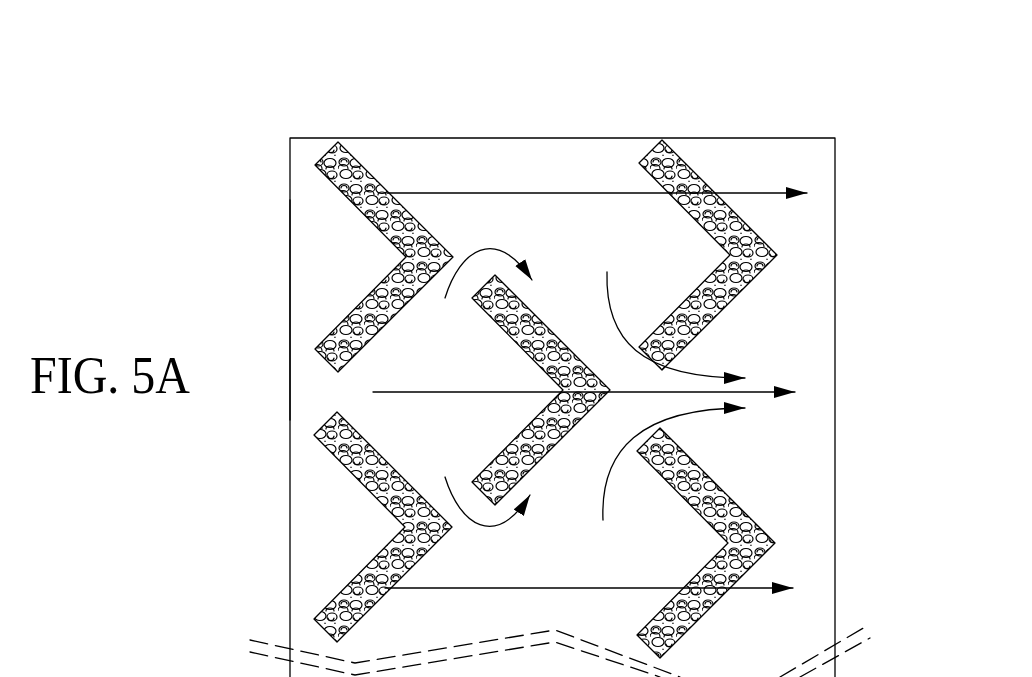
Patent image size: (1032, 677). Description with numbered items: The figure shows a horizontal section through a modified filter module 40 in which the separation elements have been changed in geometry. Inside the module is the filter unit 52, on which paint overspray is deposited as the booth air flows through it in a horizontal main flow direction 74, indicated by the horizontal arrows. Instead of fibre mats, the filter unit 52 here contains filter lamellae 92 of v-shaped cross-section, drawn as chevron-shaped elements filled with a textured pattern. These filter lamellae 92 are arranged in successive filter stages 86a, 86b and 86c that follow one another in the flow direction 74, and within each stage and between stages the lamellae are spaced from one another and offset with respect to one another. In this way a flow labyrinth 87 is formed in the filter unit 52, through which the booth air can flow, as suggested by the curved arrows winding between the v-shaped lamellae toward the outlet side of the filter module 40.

The filter module 40 is at (865, 205).
The filter unit 52 is at (833, 100).
The horizontal main flow direction 74 is at (400, 393).
The first filter stage 86a is at (370, 125).
The second filter stage 86b is at (532, 120).
The third filter stage 86c is at (684, 121).
The flow labyrinth 87 is at (300, 305).
The filter lamellae of v-shaped cross-section 92 is at (347, 190).